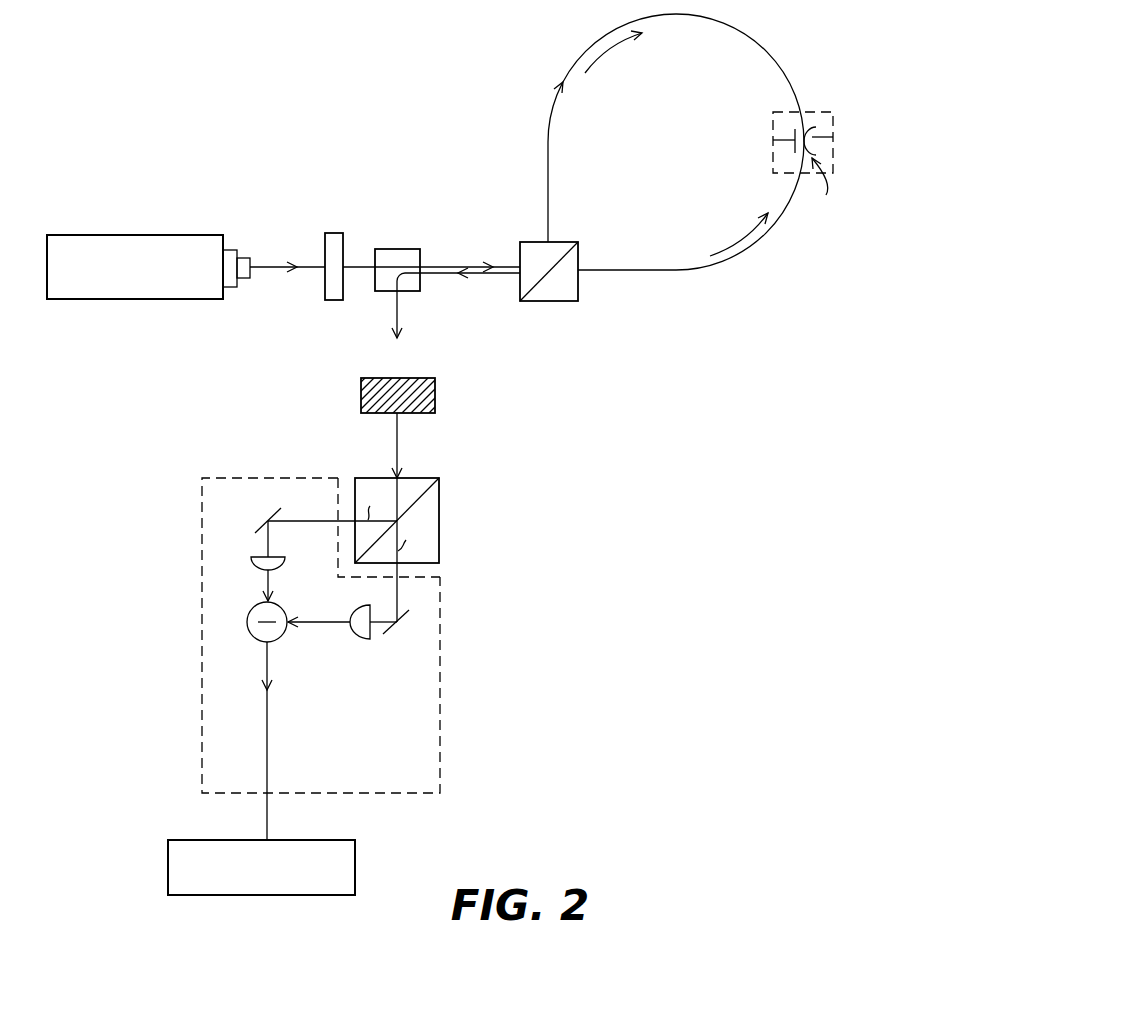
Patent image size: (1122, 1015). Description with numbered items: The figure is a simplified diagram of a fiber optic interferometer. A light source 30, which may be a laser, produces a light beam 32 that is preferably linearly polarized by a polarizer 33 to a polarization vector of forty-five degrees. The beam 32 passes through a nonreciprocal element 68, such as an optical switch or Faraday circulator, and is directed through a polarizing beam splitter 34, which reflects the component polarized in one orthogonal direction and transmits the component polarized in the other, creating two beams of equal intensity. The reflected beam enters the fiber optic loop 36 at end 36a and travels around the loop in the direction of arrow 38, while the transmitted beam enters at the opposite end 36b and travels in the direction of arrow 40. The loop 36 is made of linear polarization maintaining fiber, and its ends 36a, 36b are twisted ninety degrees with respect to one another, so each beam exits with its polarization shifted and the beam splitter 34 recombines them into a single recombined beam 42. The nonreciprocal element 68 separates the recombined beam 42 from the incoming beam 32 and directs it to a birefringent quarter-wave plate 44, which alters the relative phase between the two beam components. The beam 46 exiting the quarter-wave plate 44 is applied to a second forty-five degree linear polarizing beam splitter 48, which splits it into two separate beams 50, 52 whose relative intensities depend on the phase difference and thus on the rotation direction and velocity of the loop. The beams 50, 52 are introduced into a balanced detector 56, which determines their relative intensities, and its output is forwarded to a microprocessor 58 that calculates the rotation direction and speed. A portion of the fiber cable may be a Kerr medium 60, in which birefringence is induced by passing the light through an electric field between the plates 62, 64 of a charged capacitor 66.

The light source 30 is at (65, 235).
The light beam 32 is at (262, 262).
The polarizer 33 is at (335, 233).
The nonreciprocal element 68 is at (405, 249).
The polarizing beam splitter 34 is at (578, 262).
The fiber optic loop 36 is at (746, 32).
The end of fiber optic loop 36a is at (548, 241).
The opposite end of fiber optic loop 36b is at (578, 274).
The arrow 38 is at (607, 52).
The arrow 40 is at (727, 255).
The recombined beam 42 is at (450, 279).
The birefringent quarter-wave plate 44 is at (435, 398).
The beam 46 is at (400, 447).
The second linear polarizing beam splitter 48 is at (440, 540).
The split beam 50 is at (342, 482).
The split beam 52 is at (398, 565).
The balanced detector 56 is at (440, 715).
The microprocessor 58 is at (355, 858).
The Kerr medium 60 is at (817, 112).
The plate 62 is at (773, 140).
The plate 64 is at (833, 137).
The charged capacitor 66 is at (823, 189).